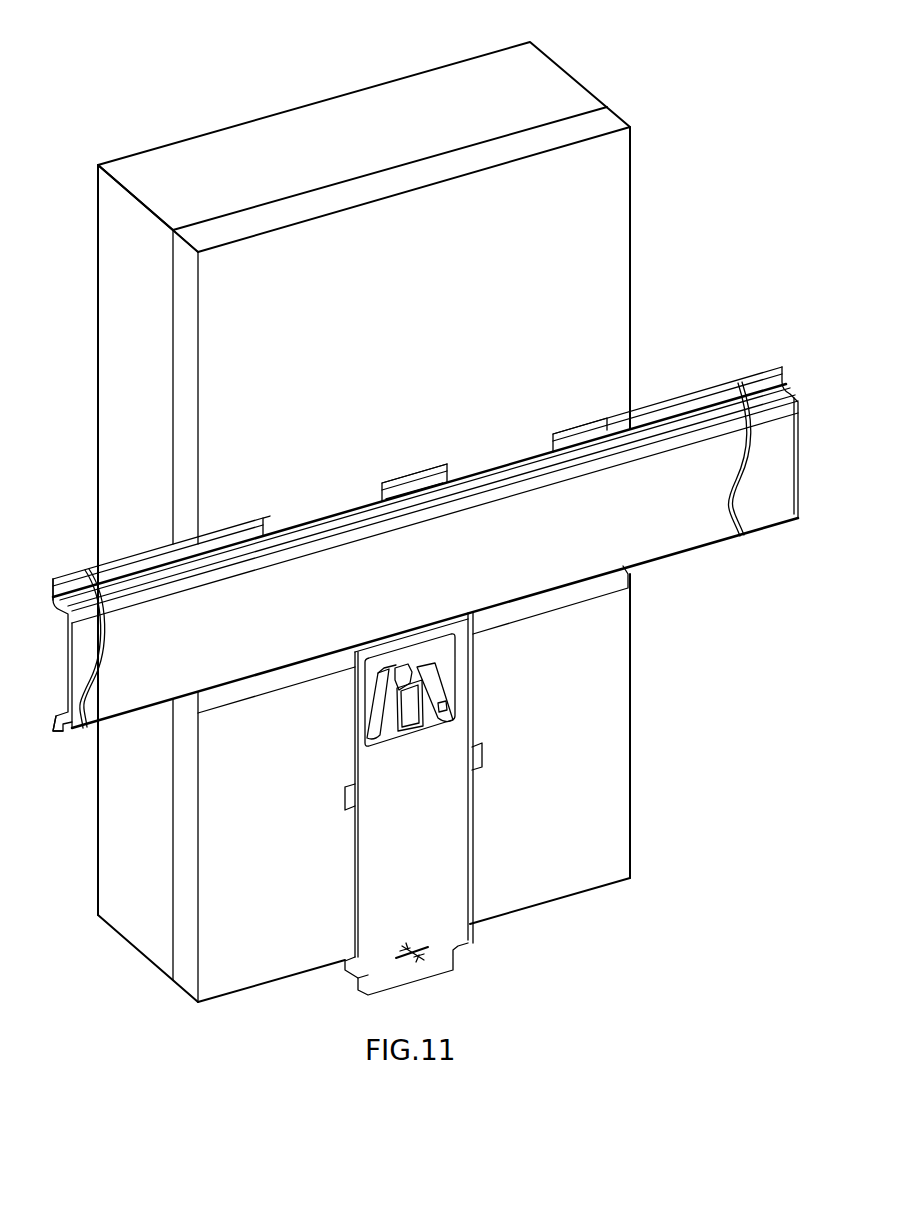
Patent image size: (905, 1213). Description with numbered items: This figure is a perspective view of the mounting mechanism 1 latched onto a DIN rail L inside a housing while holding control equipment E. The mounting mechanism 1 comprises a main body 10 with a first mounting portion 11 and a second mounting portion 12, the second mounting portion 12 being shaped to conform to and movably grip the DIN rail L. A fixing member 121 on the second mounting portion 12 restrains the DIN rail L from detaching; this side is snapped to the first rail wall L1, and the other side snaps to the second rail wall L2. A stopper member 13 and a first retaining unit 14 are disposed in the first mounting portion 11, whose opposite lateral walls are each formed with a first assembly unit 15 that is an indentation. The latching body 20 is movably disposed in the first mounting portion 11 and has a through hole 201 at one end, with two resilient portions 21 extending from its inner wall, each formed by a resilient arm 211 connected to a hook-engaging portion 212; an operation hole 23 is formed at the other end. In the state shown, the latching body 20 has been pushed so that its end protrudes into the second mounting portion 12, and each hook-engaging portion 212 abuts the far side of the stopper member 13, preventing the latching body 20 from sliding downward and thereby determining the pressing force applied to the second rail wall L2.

The control equipment E is at (550, 78).
The mounting mechanism 1 is at (640, 274).
The main body 10 is at (613, 320).
The first mounting portion 11 is at (473, 848).
The second mounting portion 12 is at (582, 438).
The fixing member 121 is at (500, 470).
The stopper member 13 is at (405, 676).
The first retaining unit 14 is at (447, 705).
The first assembly unit 15 is at (345, 793).
The latching body 20 is at (462, 933).
The through hole 201 is at (458, 658).
The resilient portion 21 is at (390, 720).
The resilient arm 211 is at (370, 717).
The hook-engaging portion 212 is at (392, 688).
The operation hole 23 is at (418, 942).
The DIN rail L is at (698, 520).
The first rail wall L1 is at (72, 580).
The second rail wall L2 is at (62, 733).